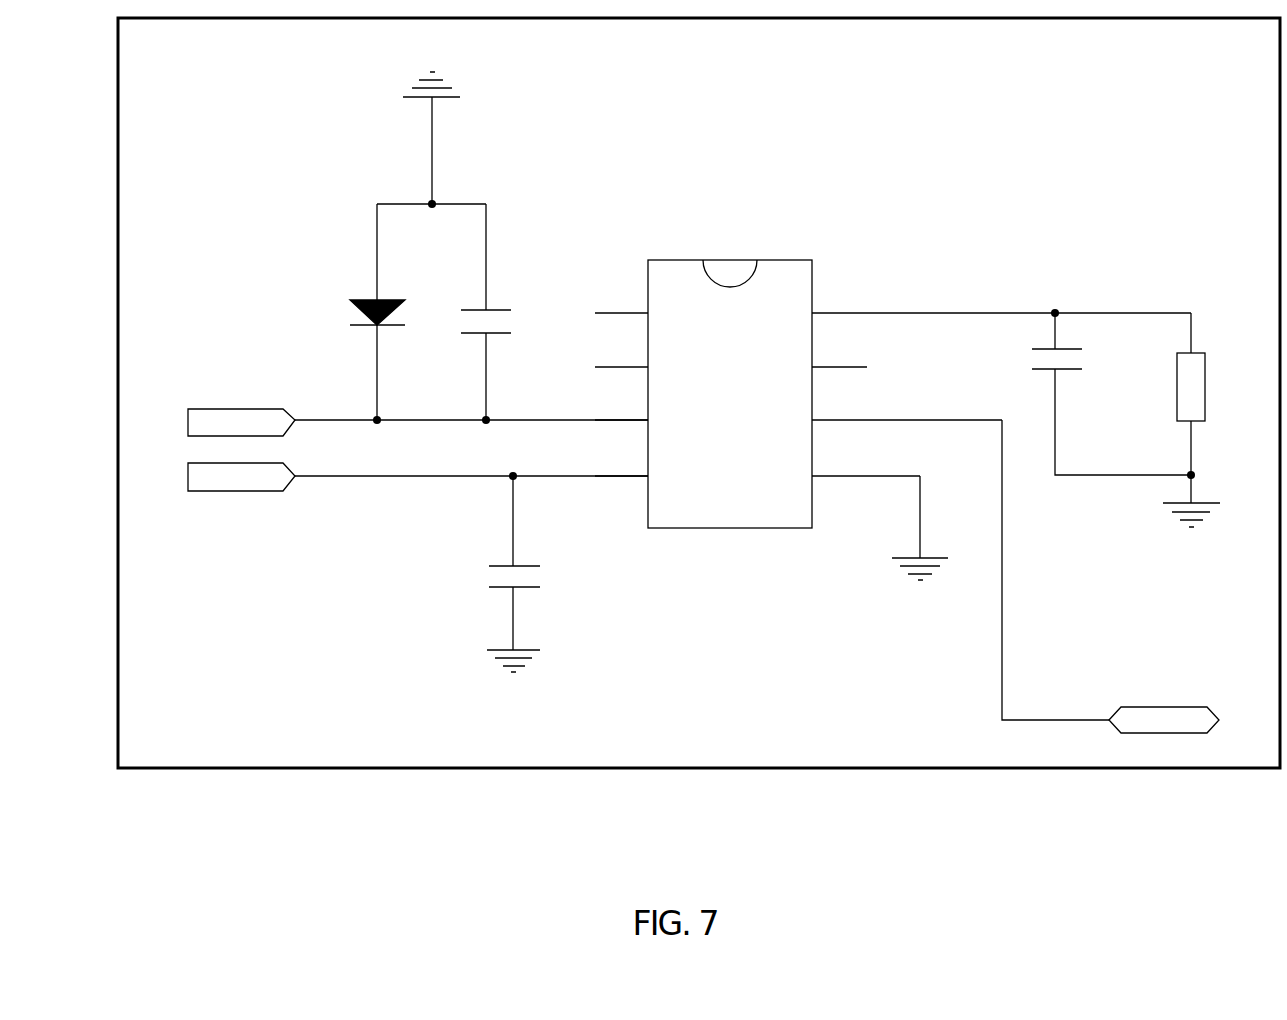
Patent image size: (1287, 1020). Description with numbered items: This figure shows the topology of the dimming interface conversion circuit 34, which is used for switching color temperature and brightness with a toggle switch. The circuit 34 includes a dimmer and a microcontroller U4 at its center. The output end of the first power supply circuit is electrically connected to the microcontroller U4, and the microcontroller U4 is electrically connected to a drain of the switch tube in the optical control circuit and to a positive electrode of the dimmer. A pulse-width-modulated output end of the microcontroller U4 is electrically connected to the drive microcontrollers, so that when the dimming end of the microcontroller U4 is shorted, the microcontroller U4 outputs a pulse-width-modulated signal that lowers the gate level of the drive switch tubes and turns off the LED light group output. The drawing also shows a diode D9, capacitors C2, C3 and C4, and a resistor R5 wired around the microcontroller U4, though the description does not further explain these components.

The dimming interface conversion circuit 34 is at (699, 426).
The microcontroller U4 is at (718, 384).
The diode 4148 D9 is at (381, 295).
The capacitor 10nF/50V C2 is at (536, 322).
The capacitor 4.7uF/50V C3 is at (566, 552).
The capacitor 1uF/25V C4 is at (1101, 373).
The resistor 5.1K R5 is at (1204, 386).